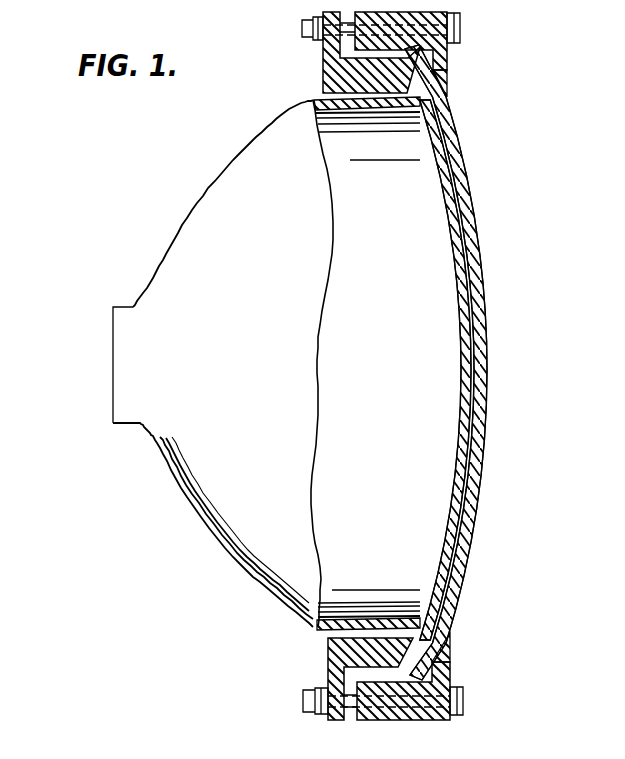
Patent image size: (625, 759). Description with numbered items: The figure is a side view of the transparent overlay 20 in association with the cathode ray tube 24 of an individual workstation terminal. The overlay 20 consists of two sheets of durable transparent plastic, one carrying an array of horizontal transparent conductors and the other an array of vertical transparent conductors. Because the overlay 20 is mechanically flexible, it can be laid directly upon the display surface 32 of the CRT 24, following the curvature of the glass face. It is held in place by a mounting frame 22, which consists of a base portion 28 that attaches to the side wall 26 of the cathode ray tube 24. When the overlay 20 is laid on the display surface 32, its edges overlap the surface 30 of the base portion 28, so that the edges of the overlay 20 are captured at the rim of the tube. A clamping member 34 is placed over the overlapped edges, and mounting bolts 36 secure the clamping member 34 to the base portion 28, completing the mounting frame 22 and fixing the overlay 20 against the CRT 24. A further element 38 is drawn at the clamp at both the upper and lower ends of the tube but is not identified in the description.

The overlay 20 is at (460, 152).
The mounting frame 22 is at (488, 61).
The cathode ray tube 24 is at (230, 371).
The side wall 26 is at (322, 100).
The base portion 28 is at (323, 63).
The surface of the base portion 30 is at (437, 93).
The display surface 32 is at (461, 405).
The clamping member 34 is at (447, 50).
The mounting bolts 36 is at (302, 29).
The wedge spacer 38 is at (447, 77).